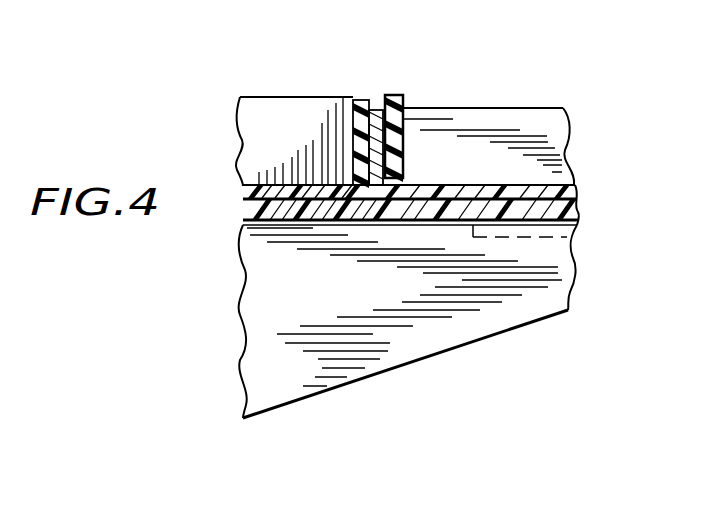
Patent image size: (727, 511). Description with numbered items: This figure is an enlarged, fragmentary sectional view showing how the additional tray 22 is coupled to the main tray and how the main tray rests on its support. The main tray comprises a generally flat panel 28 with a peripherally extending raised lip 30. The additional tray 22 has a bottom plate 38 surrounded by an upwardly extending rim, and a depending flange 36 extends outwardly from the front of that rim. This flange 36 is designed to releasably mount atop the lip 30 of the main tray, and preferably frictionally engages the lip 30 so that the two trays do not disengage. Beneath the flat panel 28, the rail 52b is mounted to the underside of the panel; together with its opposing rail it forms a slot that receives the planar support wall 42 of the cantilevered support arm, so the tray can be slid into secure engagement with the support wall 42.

The additional tray 22 is at (286, 89).
The lip 30 is at (374, 123).
The depending flange 36 is at (404, 118).
The flat panel 28 is at (484, 200).
The bottom plate 38 is at (273, 190).
The support wall 42 is at (578, 212).
The rail 52b is at (576, 236).